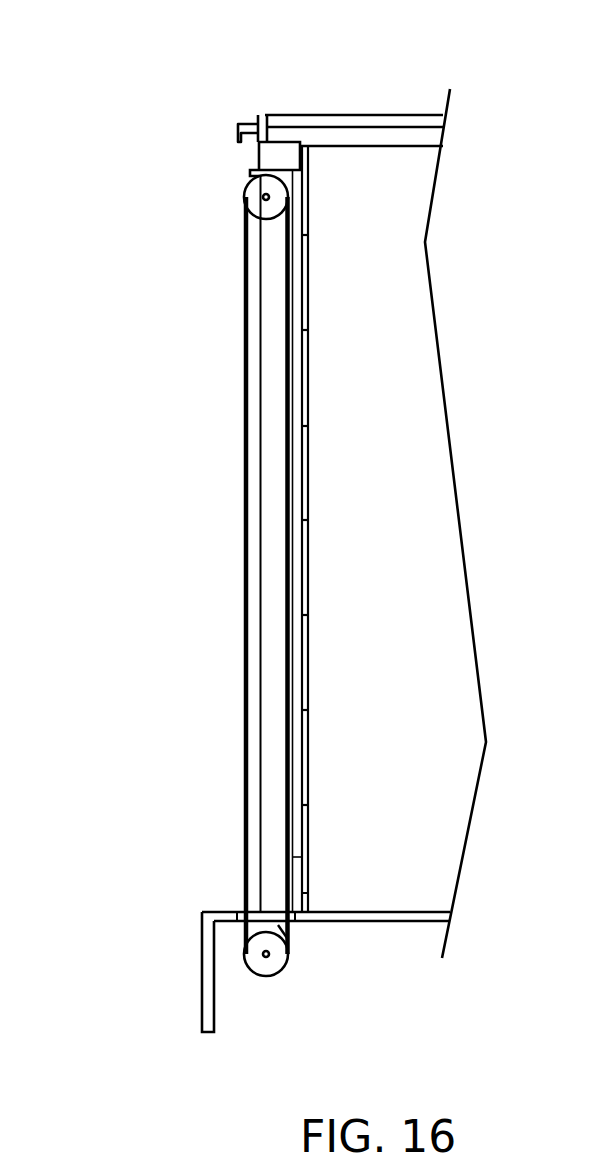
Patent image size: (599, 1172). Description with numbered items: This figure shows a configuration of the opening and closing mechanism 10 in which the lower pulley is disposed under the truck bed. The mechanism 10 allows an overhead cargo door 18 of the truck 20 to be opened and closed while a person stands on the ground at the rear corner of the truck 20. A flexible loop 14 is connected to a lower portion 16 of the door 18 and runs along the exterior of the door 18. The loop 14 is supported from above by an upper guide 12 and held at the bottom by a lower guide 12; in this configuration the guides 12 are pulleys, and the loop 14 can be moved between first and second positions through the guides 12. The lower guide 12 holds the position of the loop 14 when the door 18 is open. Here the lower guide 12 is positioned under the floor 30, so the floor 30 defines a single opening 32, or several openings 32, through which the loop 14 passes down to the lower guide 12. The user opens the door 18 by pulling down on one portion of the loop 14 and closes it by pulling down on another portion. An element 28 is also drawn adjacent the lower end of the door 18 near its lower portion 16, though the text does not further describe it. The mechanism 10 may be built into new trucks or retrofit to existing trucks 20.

The opening and closing mechanism 10 is at (232, 255).
The guide 12 is at (248, 187).
The flexible loop 14 is at (244, 650).
The lower portion 16 is at (305, 893).
The overhead cargo door 18 is at (305, 392).
The truck 20 is at (400, 95).
The slide 28 is at (294, 855).
The floor 30 is at (222, 911).
The opening 32 is at (288, 938).